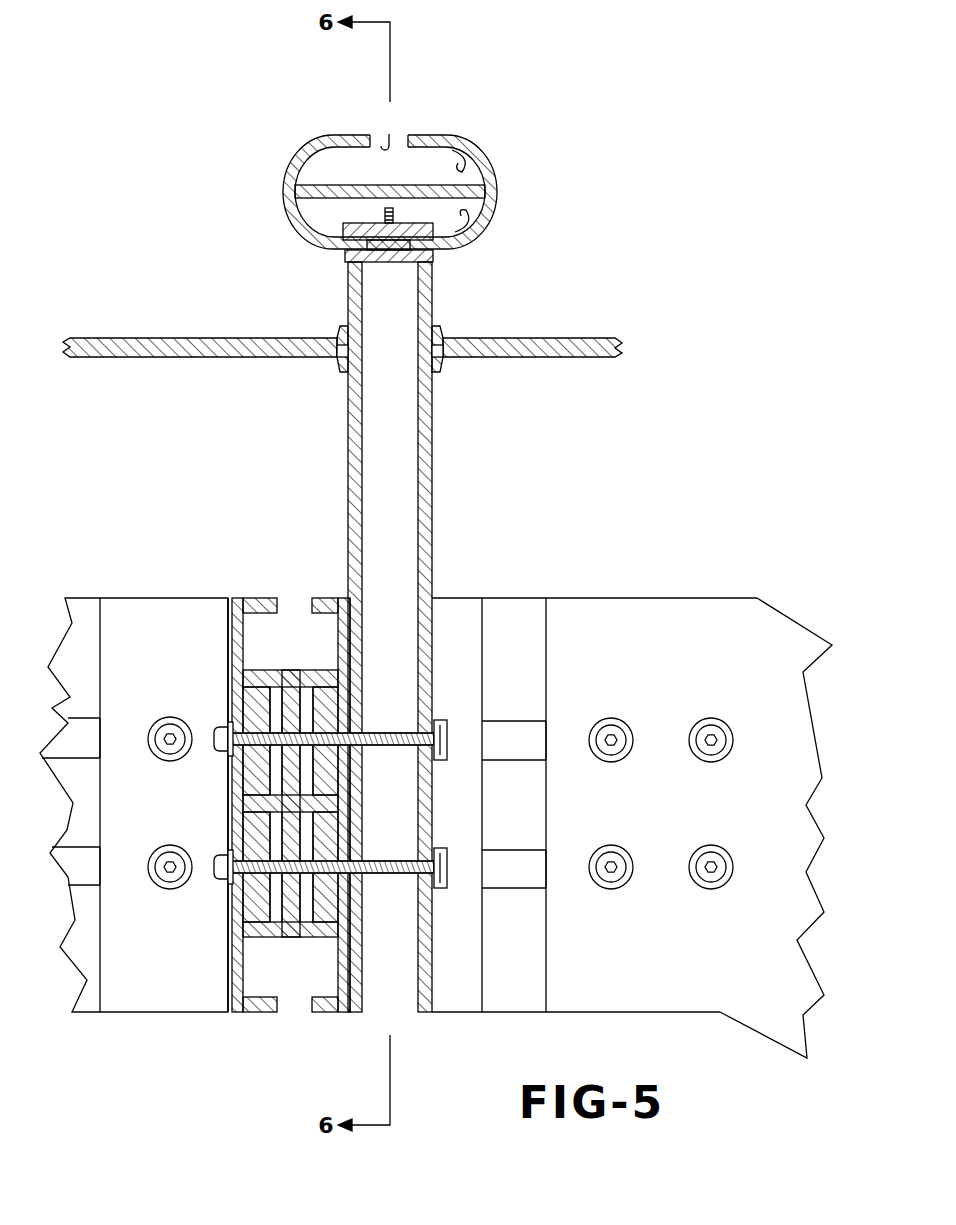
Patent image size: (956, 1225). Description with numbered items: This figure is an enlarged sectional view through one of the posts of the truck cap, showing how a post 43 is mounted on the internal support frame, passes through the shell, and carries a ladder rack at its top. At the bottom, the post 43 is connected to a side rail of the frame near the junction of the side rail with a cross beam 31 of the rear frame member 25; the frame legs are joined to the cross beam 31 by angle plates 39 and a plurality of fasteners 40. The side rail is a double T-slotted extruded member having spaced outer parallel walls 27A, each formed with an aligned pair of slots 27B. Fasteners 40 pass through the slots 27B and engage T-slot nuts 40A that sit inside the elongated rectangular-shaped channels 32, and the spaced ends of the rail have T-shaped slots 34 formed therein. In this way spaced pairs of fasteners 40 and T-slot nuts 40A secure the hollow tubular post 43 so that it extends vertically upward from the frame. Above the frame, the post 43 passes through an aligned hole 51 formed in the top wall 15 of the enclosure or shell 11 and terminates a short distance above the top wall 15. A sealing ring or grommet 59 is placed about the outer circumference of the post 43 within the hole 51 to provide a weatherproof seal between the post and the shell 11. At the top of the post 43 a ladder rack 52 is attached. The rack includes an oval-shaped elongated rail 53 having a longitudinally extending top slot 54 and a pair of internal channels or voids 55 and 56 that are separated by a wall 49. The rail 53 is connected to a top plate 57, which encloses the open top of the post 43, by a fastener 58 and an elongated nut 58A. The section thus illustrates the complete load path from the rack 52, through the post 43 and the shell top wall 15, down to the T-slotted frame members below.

The enclosure 11 is at (342, 342).
The top wall 15 is at (215, 350).
The rear frame member 25 is at (729, 796).
The outer parallel walls 27A is at (228, 665).
The slots 27B is at (245, 762).
The cross beam 31 is at (85, 600).
The channels 32 is at (318, 695).
The T-shaped slots 34 is at (292, 617).
The angle plates 39 is at (626, 620).
The fasteners 40 is at (165, 722).
The T-slot nuts 40A is at (243, 697).
The post 43 is at (433, 458).
The wall 49 is at (332, 186).
The holes 51 is at (432, 347).
The ladder rack 52 is at (397, 200).
The oval-shaped elongated rails 53 is at (352, 136).
The top slot 54 is at (388, 140).
The internal channel 55 is at (462, 160).
The internal channel 56 is at (465, 218).
The top plate 57 is at (400, 262).
The fasteners 58 is at (383, 213).
The elongated nuts 58A is at (362, 230).
The sealing ring 59 is at (346, 366).